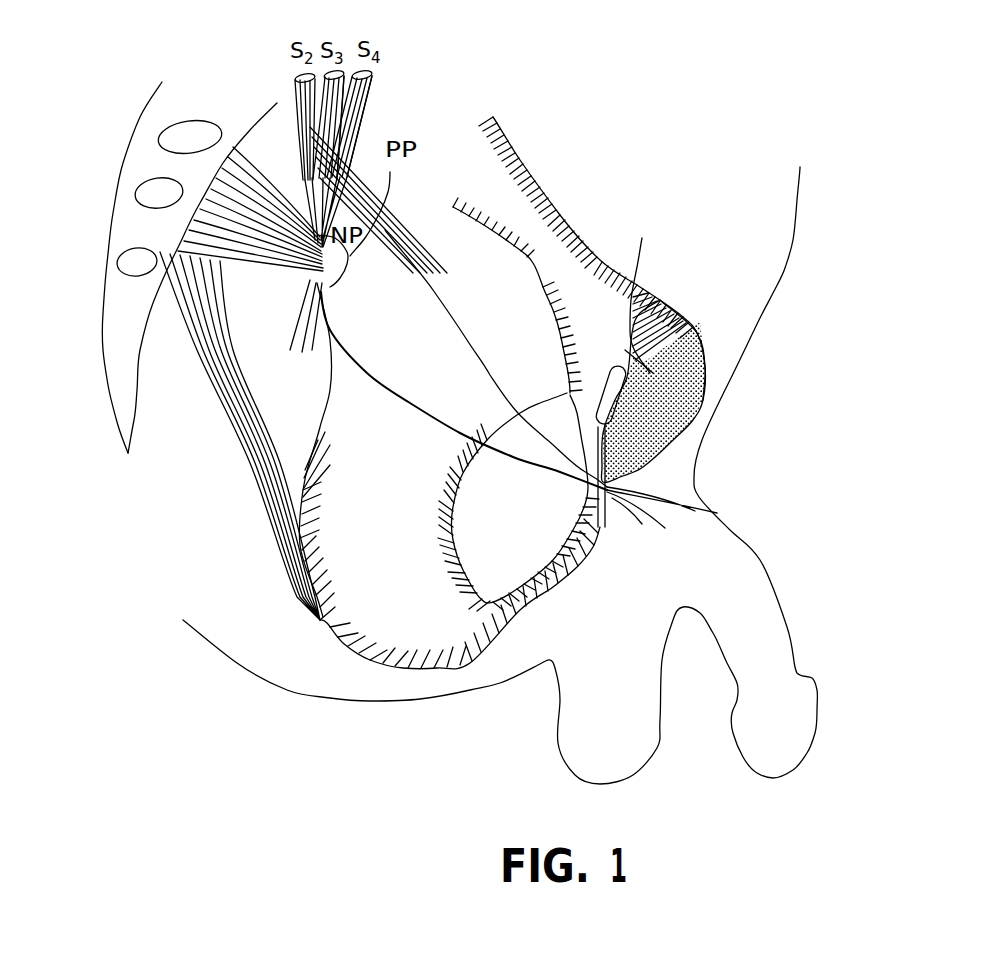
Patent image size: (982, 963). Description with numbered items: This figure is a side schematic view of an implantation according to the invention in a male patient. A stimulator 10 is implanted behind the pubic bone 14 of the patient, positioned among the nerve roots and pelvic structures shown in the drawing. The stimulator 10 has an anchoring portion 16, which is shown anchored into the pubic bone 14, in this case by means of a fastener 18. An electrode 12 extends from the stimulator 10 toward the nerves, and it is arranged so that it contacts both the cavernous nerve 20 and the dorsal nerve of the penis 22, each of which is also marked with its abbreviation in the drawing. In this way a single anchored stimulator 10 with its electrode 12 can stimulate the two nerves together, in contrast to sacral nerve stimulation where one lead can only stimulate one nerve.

The stimulator 10 is at (612, 398).
The electrode 12 is at (603, 502).
The pubic bone 14 is at (657, 423).
The anchoring portion 16 is at (640, 293).
The fastener 18 is at (630, 373).
The cavernous nerve 20 is at (498, 388).
The dorsal nerve of the penis 22 is at (422, 380).